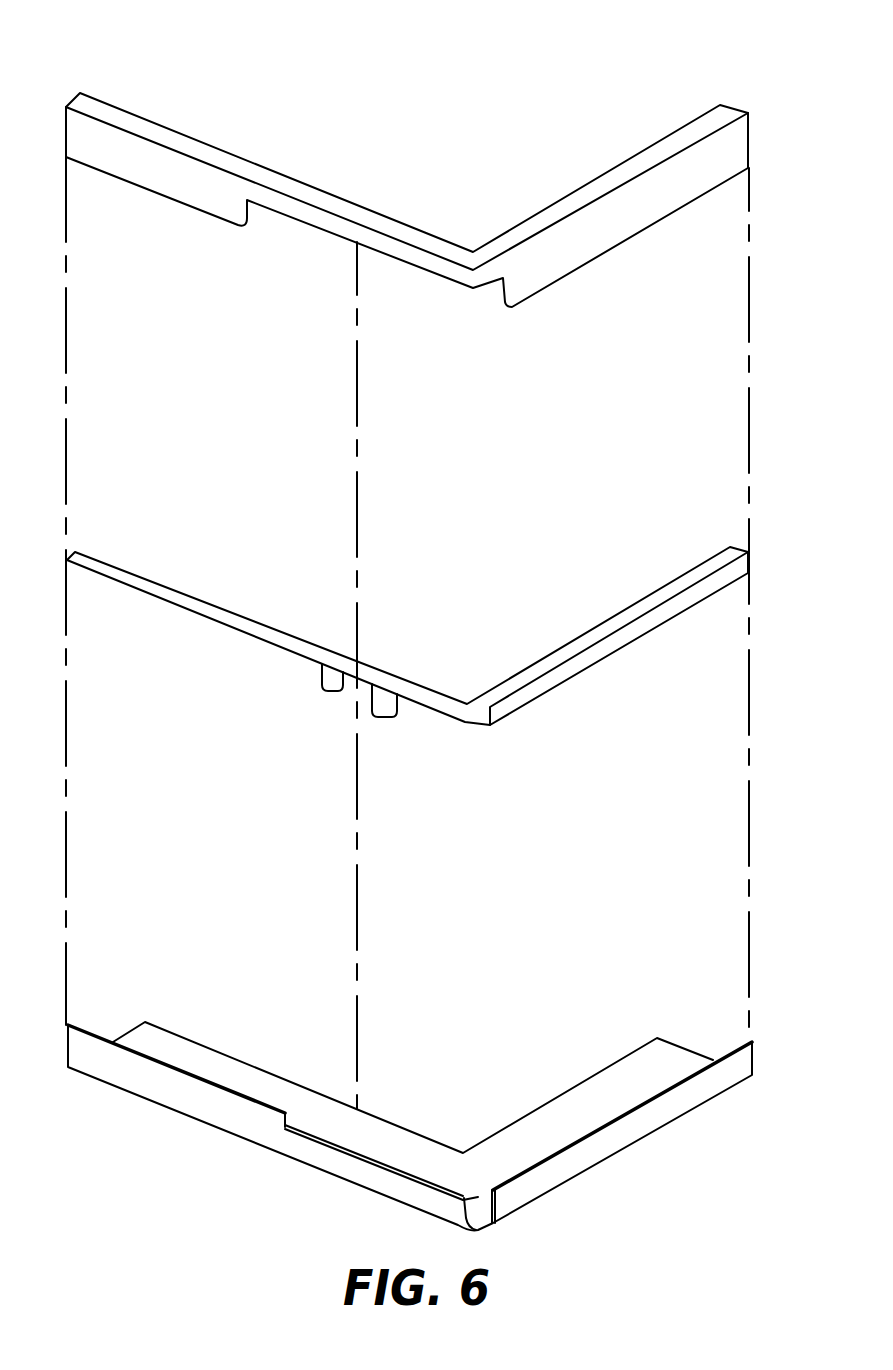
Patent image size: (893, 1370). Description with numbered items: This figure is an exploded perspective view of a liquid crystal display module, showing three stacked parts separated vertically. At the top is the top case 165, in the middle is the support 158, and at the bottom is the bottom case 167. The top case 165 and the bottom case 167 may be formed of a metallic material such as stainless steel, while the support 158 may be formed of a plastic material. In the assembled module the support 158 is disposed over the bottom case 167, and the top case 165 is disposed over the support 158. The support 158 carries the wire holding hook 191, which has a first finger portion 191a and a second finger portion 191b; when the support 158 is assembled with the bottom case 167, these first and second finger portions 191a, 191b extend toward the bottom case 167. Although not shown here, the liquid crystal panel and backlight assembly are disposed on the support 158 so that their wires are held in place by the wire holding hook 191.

The top case 165 is at (558, 222).
The support 158 is at (547, 673).
The bottom case 167 is at (207, 1110).
The wire holding hook 191 is at (367, 752).
The first finger portion 191a is at (335, 692).
The second finger portion 191b is at (392, 714).